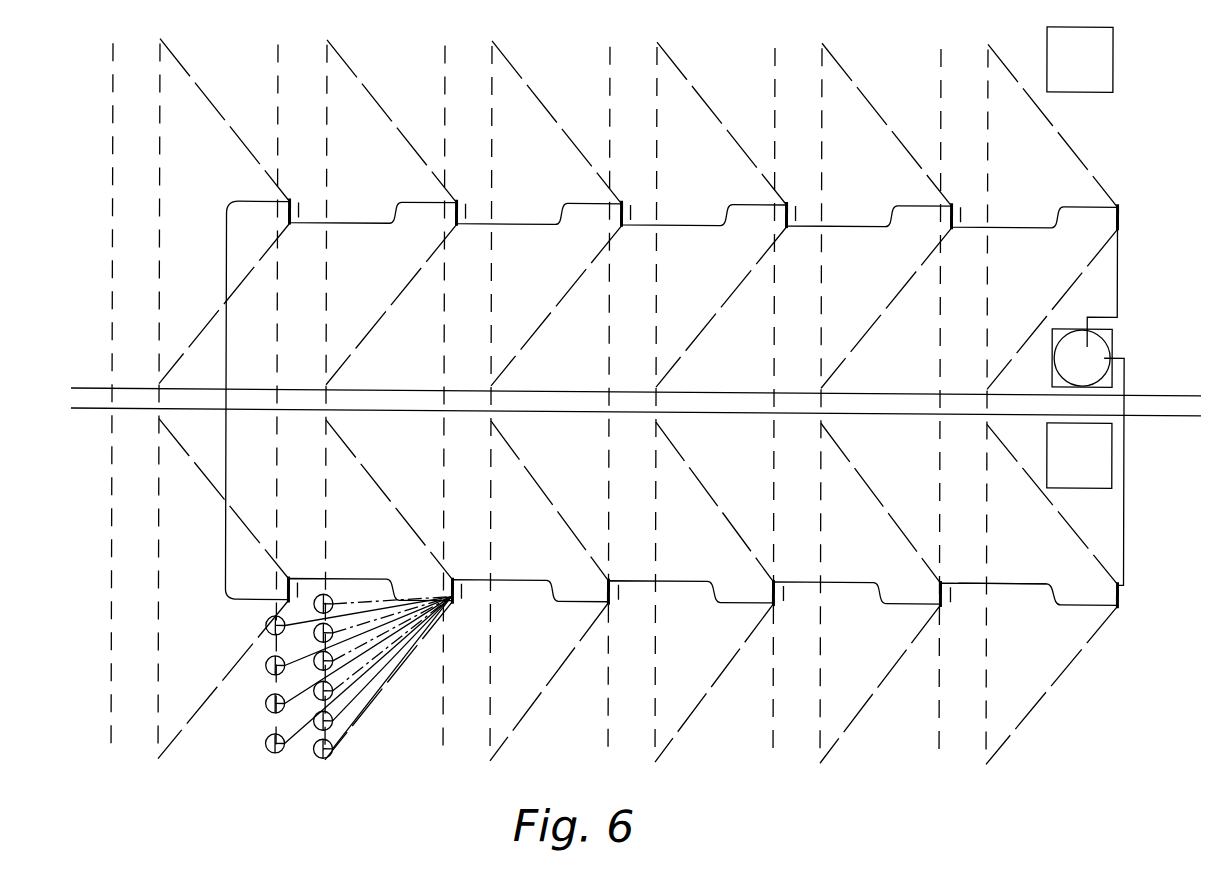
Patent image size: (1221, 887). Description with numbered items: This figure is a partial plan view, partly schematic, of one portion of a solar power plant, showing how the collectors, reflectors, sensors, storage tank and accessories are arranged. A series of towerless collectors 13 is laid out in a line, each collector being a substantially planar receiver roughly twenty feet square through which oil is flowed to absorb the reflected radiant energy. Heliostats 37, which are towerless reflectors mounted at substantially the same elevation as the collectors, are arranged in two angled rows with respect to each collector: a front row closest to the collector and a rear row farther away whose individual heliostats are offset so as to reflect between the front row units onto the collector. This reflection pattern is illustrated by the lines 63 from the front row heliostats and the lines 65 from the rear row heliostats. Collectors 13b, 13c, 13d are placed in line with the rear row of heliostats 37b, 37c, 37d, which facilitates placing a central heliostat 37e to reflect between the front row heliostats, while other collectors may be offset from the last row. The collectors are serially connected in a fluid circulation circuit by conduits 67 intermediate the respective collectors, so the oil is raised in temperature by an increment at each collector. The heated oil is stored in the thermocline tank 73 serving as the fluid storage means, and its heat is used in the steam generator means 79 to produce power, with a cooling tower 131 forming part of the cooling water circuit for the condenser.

The collector 13 is at (452, 218).
The collector 13b is at (602, 585).
The collector 13c is at (768, 586).
The collector 13d is at (936, 586).
The heliostat 37 is at (114, 160).
The heliostat 37b is at (604, 509).
The heliostat 37c is at (772, 508).
The heliostat 37d is at (940, 509).
The central heliostat 37e is at (787, 593).
The lines from front row heliostats 63 is at (353, 716).
The lines from rear row heliostats 65 is at (297, 735).
The conduit 67 is at (1017, 575).
The thermocline tank 73 is at (1098, 341).
The steam generator means 79 is at (1102, 466).
The cooling tower 131 is at (1083, 73).